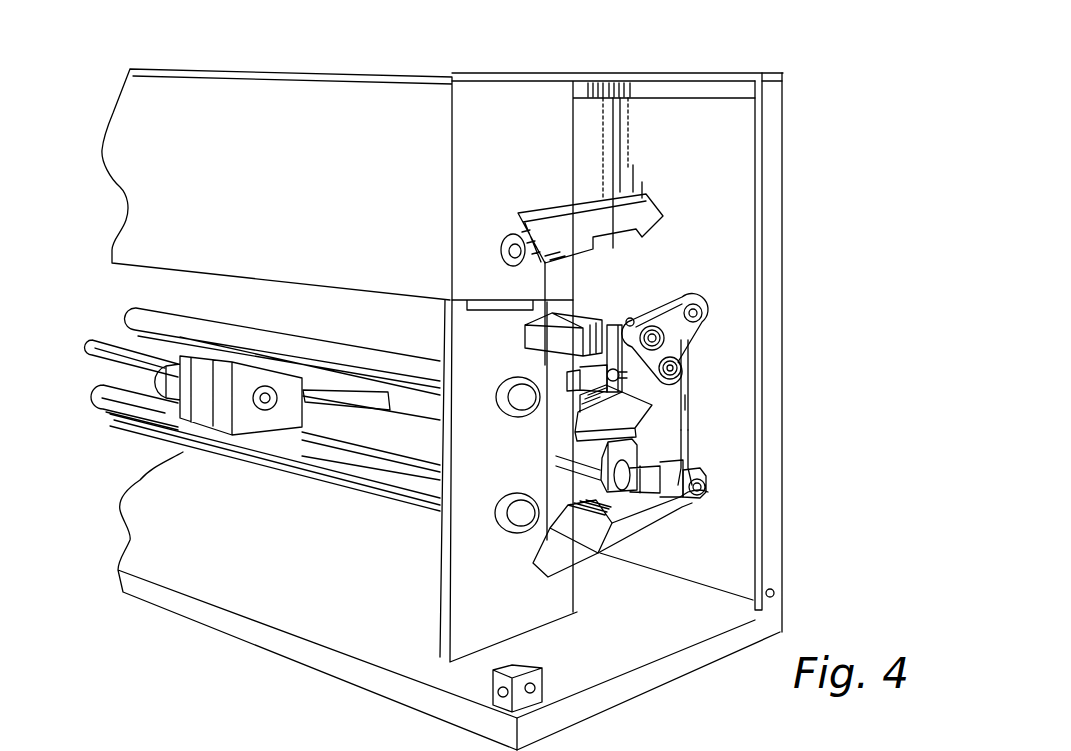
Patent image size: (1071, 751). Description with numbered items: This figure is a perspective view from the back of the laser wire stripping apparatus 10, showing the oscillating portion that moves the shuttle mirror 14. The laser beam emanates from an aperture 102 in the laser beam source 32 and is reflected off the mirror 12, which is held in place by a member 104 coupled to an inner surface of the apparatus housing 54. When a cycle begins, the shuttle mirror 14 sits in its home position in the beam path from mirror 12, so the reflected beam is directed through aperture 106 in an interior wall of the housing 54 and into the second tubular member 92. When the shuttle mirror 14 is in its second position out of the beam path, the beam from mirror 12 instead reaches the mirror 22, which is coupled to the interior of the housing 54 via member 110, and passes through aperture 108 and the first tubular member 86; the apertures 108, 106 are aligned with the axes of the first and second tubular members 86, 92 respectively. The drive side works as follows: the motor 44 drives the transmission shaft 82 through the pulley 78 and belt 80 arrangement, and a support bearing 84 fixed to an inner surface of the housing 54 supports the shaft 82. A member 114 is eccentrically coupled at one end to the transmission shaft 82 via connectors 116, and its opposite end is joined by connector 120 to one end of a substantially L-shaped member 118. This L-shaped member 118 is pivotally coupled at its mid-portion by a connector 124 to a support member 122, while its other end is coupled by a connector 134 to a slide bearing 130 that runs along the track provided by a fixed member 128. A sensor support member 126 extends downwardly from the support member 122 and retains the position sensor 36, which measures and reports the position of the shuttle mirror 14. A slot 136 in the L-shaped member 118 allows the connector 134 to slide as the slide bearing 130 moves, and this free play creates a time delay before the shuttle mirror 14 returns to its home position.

The apparatus 10 is at (752, 39).
The mirror 12 is at (530, 266).
The shuttle mirror 14 is at (582, 412).
The mirror 22 is at (537, 547).
The laser beam source 32 is at (314, 188).
The position sensor 36 is at (692, 442).
The motor 44 is at (200, 415).
The apparatus housing 54 is at (768, 114).
The pulley 78 is at (166, 372).
The belt 80 is at (170, 388).
The transmission shaft 82 is at (397, 430).
The support bearing 84 is at (631, 458).
The first tubular member 86 is at (330, 463).
The second tubular member 92 is at (332, 347).
The aperture 102 is at (510, 240).
The member 104 is at (612, 208).
The aperture 106 is at (520, 412).
The aperture 108 is at (520, 530).
The member 110 is at (660, 520).
The member 114 is at (692, 402).
The connectors 116 is at (700, 496).
The L-shaped member 118 is at (668, 300).
The connector 120 is at (702, 311).
The support member 122 is at (630, 322).
The connector 124 is at (666, 341).
The sensor support member 126 is at (615, 325).
The fixed member 128 is at (530, 360).
The slide bearing 130 is at (692, 404).
The connector 134 is at (680, 372).
The slot 136 is at (675, 355).